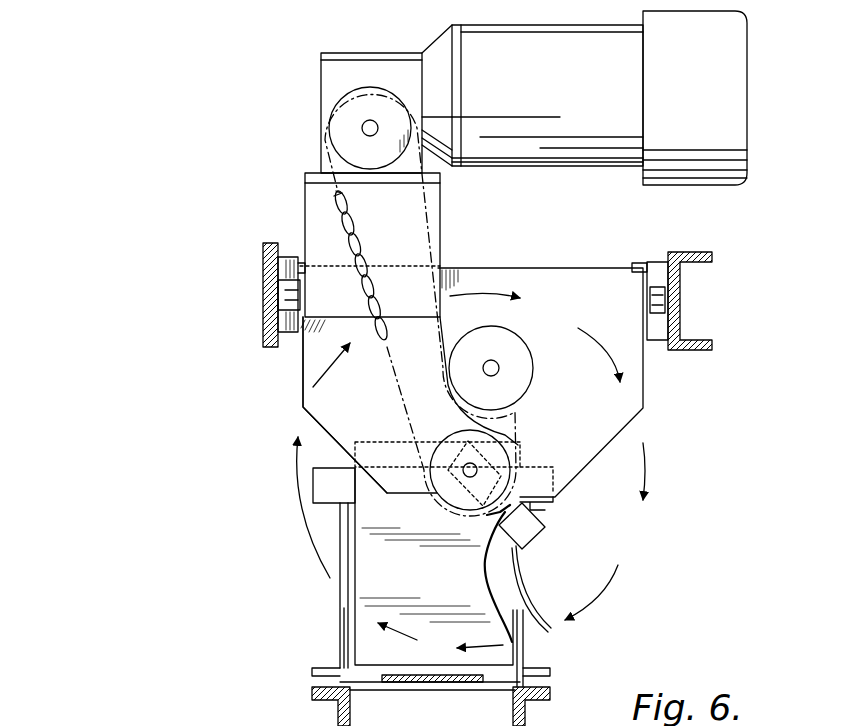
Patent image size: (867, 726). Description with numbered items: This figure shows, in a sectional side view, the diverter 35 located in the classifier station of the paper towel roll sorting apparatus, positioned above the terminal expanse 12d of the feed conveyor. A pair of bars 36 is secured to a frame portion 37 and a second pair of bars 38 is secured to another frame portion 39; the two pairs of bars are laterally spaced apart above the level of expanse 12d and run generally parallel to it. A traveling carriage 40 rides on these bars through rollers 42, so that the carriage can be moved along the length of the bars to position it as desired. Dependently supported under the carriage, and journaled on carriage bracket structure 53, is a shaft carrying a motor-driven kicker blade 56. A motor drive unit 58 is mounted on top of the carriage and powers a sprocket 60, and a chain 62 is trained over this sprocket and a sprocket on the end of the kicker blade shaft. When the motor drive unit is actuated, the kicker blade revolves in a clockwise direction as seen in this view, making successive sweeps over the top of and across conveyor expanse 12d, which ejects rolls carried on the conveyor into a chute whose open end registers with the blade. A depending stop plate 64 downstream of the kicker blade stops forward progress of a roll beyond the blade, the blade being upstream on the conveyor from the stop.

The terminal expanse of feed conveyor 12d is at (465, 678).
The diverter 35 is at (182, 363).
The bars 36 is at (280, 328).
The frame portion 37 is at (263, 338).
The bars 38 is at (666, 325).
The frame portion 39 is at (695, 343).
The traveling carriage 40 is at (287, 195).
The rollers 42 is at (288, 292).
The carriage bracket structure 53 is at (303, 395).
The kicker blade 56 is at (548, 632).
The motor drive unit 58 is at (578, 96).
The sprocket 60 is at (332, 108).
The chain 62 is at (397, 389).
The stop plate 64 is at (447, 583).